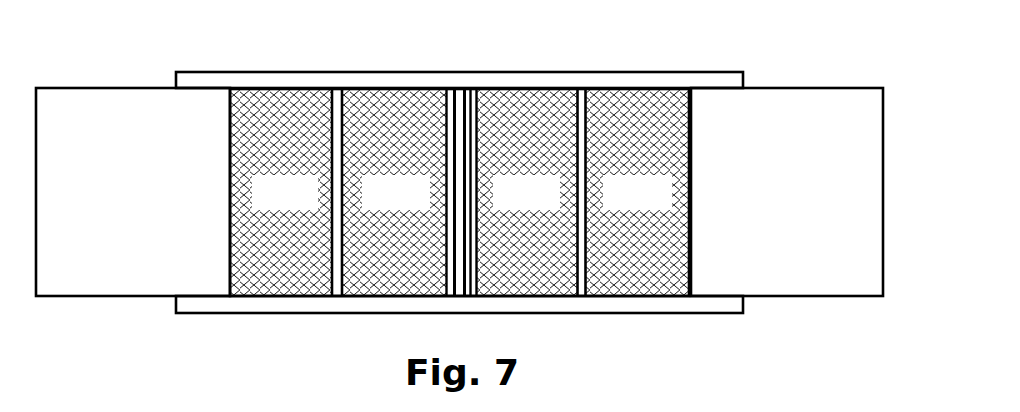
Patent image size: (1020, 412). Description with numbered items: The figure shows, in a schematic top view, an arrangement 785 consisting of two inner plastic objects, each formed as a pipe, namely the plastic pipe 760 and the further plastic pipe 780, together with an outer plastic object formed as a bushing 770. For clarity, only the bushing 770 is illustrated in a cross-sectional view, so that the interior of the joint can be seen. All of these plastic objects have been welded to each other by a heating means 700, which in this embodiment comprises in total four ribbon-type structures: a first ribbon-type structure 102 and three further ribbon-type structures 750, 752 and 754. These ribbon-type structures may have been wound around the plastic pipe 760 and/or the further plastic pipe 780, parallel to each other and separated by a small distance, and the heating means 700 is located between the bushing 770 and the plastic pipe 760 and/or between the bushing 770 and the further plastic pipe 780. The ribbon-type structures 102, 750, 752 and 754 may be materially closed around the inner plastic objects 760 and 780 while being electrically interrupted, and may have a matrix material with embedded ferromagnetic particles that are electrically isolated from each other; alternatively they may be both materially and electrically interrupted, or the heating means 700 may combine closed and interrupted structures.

The arrangement 785 is at (853, 78).
The heating means 700 is at (509, 192).
The plastic pipe 760 is at (132, 202).
The further plastic pipe 780 is at (758, 200).
The bushing 770 is at (346, 71).
The first ribbon-type structure 102 is at (268, 204).
The further ribbon-type structure 750 is at (377, 204).
The further ribbon-type structure 752 is at (508, 204).
The further ribbon-type structure 754 is at (618, 204).